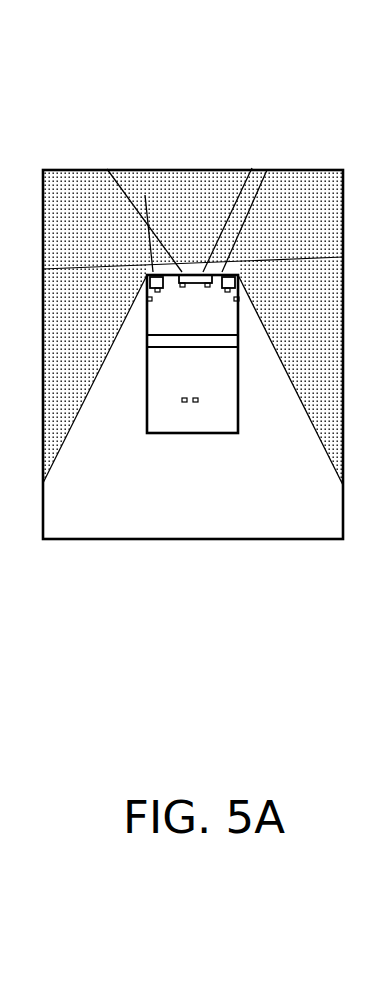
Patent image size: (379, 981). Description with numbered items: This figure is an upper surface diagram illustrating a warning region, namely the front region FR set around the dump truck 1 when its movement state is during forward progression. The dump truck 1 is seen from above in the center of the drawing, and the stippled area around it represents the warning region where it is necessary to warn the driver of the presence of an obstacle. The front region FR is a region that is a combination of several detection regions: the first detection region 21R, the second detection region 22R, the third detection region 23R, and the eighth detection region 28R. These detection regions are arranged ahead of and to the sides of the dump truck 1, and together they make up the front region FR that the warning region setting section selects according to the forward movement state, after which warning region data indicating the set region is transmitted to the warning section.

The dump truck 1 is at (185, 323).
The front region FR is at (303, 83).
The first detection region 21R is at (145, 195).
The second detection region 22R is at (273, 215).
The third detection region 23R is at (320, 328).
The eighth detection region 28R is at (60, 327).